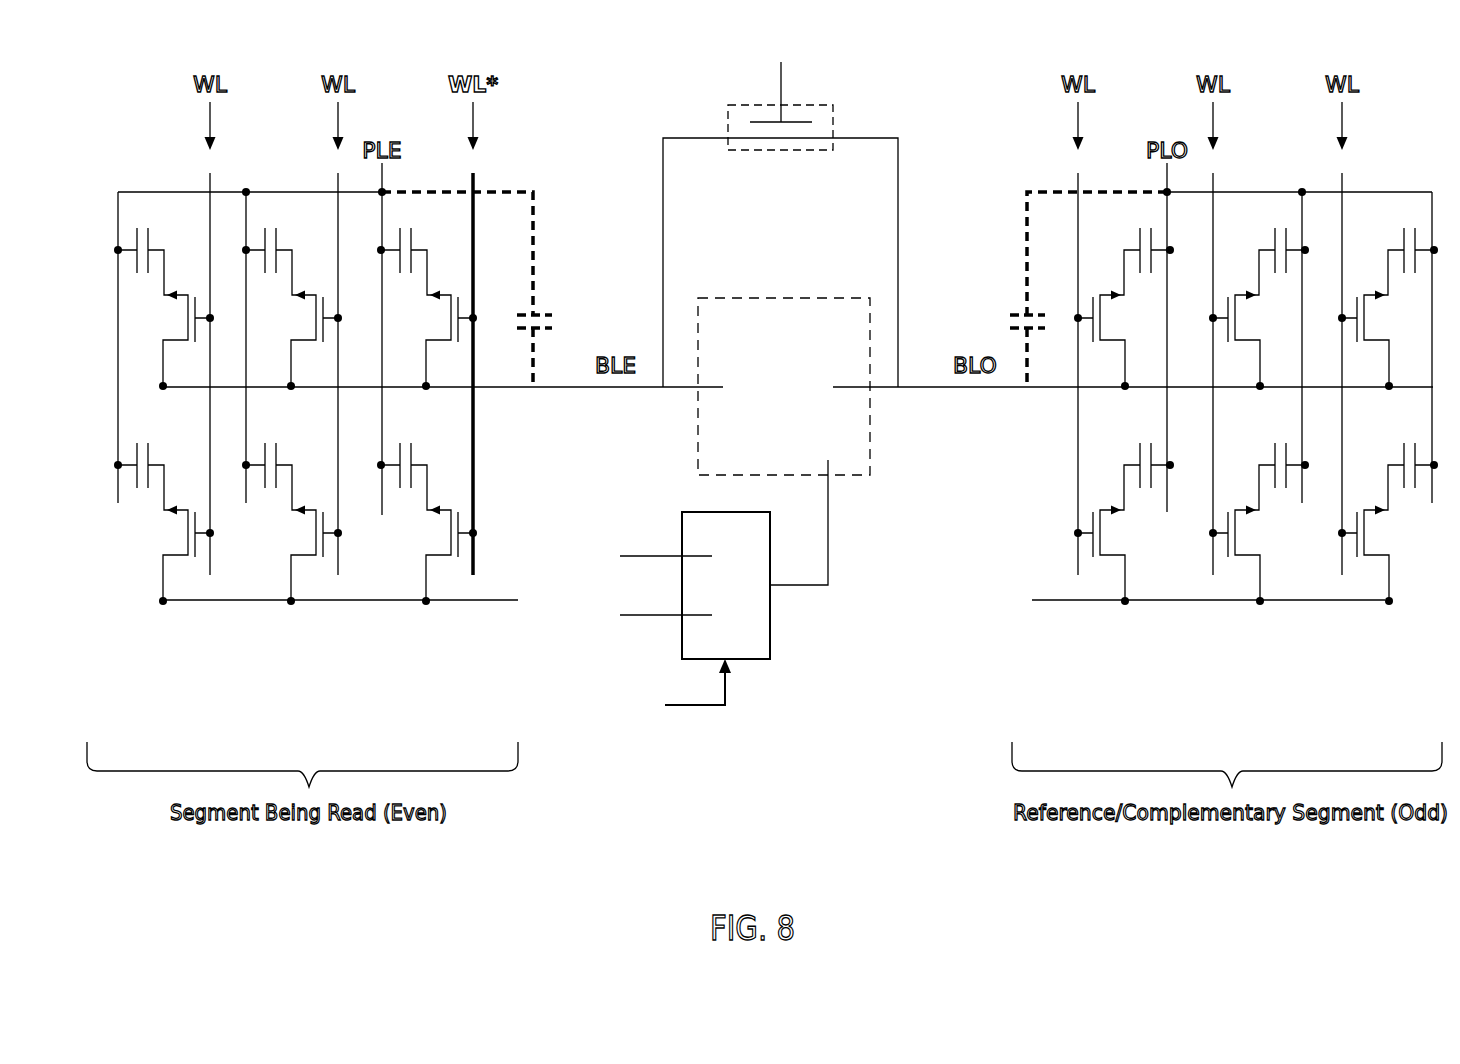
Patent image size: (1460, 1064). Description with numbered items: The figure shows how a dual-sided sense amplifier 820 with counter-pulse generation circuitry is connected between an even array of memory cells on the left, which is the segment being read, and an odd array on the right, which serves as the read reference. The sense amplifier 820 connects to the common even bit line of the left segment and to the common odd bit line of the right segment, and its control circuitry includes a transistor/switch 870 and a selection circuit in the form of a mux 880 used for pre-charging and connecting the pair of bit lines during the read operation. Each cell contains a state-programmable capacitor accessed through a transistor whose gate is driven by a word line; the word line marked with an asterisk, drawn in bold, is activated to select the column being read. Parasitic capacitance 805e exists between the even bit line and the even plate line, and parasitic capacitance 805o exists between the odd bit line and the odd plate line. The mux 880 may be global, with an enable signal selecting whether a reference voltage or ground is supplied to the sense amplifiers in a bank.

The parasitic capacitance 805e is at (552, 315).
The parasitic capacitance 805o is at (1010, 315).
The transistor/switch 870 is at (834, 105).
The sense amplifier 820 is at (765, 400).
The mux 880 is at (771, 633).